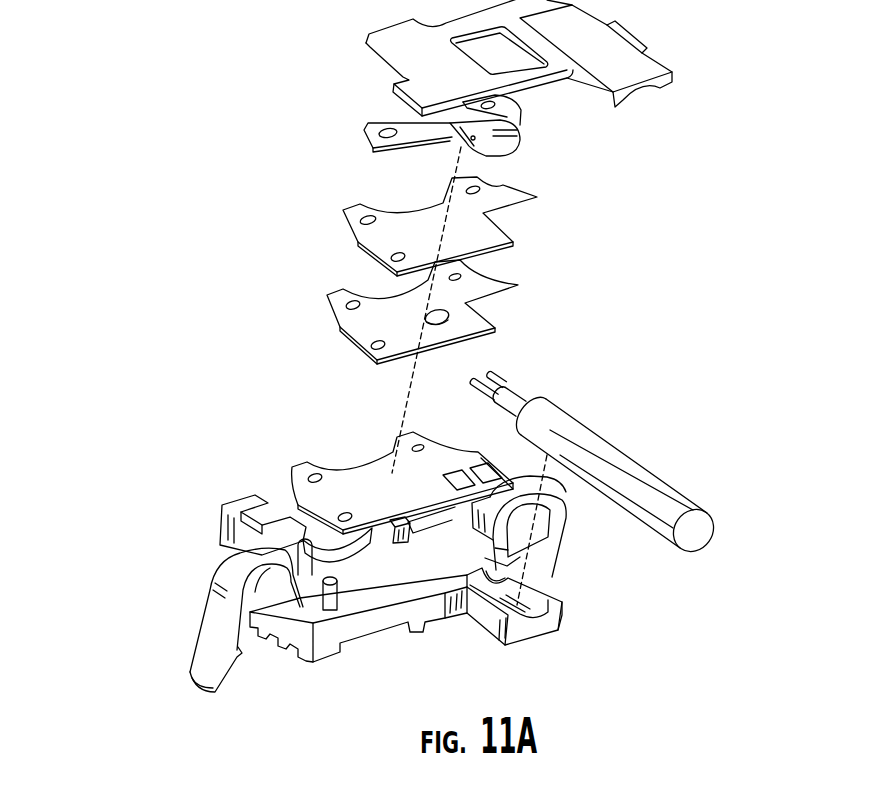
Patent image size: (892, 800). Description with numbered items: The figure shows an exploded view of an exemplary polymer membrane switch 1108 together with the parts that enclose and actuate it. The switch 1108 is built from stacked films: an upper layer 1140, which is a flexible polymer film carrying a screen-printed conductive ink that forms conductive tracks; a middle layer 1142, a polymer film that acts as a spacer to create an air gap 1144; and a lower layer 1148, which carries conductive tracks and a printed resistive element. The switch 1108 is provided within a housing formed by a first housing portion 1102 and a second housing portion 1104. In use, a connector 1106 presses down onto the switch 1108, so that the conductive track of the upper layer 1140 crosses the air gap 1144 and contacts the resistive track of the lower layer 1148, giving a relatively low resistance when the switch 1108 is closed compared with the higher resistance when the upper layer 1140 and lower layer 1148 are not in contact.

The first housing portion 1102 is at (363, 630).
The second housing portion 1104 is at (666, 80).
The connector 1106 is at (518, 143).
The polymer membrane switch 1108 is at (182, 309).
The upper layer 1140 is at (356, 241).
The middle layer 1142 is at (337, 328).
The air gap 1144 is at (452, 318).
The lower layer 1148 is at (292, 472).